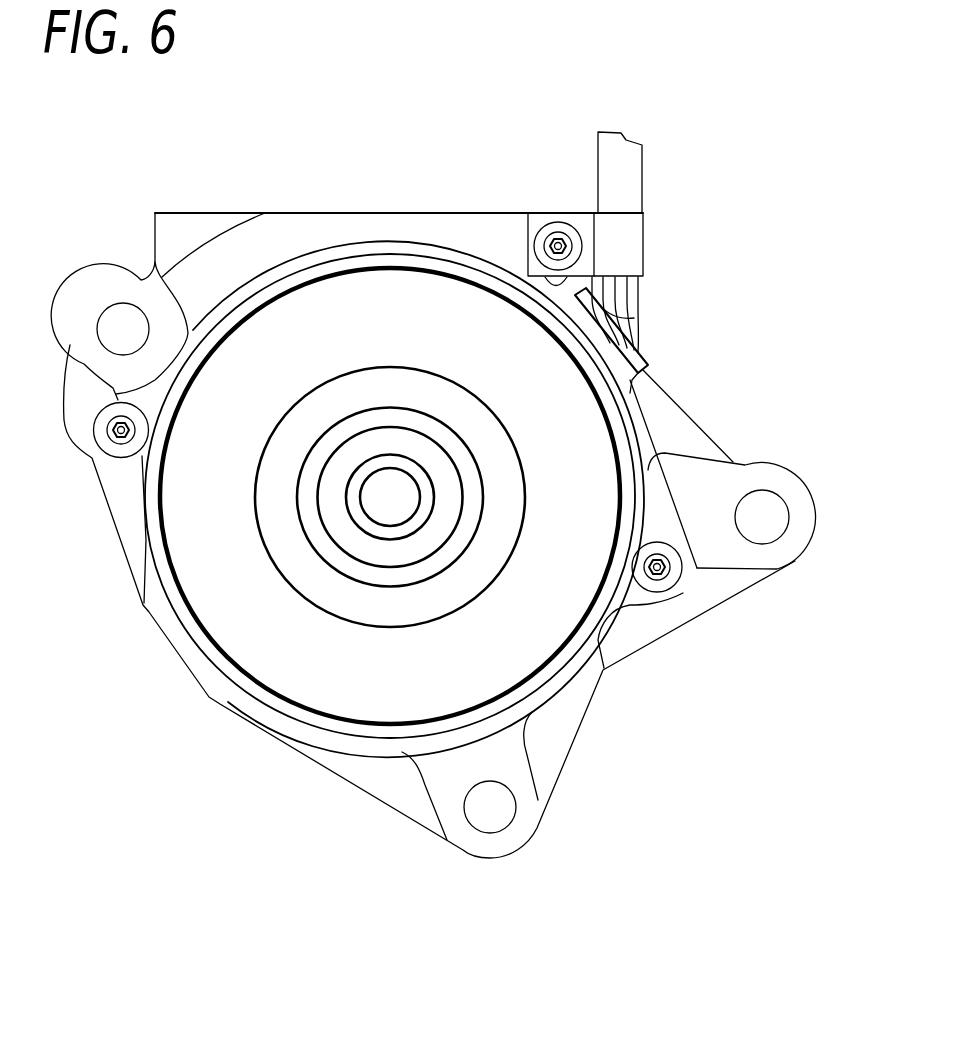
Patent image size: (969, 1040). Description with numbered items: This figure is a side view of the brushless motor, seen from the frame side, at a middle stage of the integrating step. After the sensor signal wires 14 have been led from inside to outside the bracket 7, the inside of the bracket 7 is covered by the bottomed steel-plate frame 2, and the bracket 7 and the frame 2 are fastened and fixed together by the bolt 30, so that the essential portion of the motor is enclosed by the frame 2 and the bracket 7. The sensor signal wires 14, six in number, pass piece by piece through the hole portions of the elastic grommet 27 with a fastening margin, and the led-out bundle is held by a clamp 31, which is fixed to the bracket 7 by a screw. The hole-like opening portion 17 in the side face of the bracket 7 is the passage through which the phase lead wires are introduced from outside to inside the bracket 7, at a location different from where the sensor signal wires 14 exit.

The frame 2 is at (650, 500).
The bracket 7 is at (247, 250).
The sensor signal wires 14 is at (600, 290).
The opening portion 17 is at (380, 214).
The grommet 27 is at (638, 342).
The bolt 30 is at (113, 447).
The clamp 31 is at (633, 233).